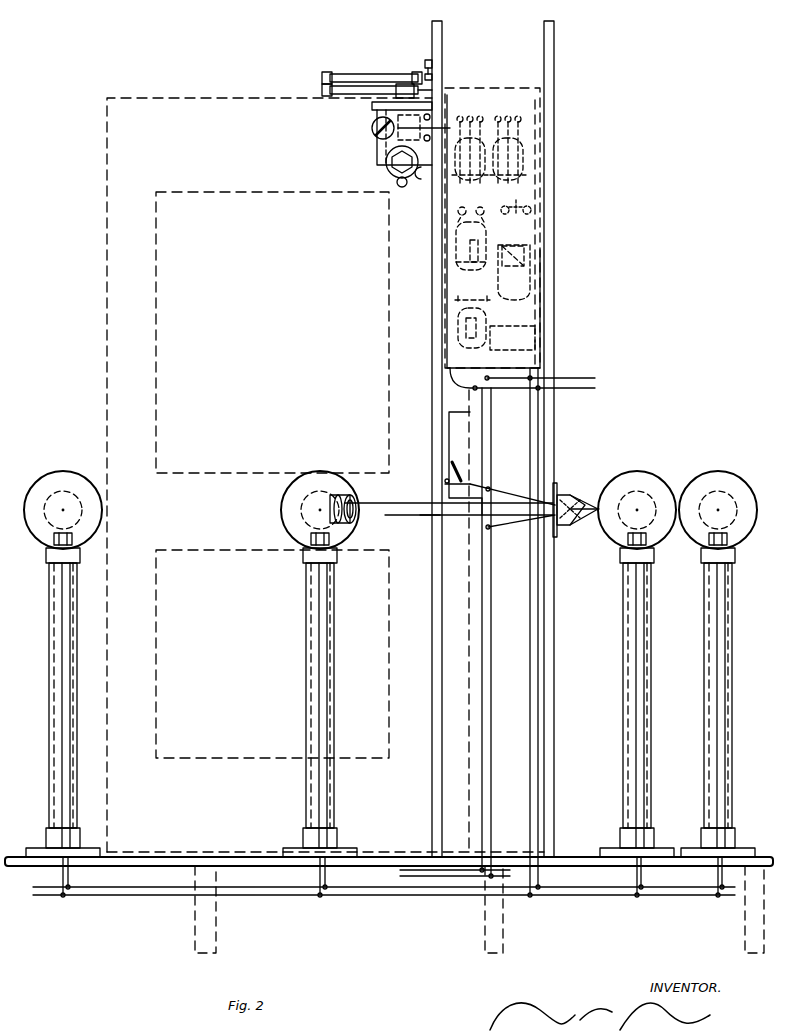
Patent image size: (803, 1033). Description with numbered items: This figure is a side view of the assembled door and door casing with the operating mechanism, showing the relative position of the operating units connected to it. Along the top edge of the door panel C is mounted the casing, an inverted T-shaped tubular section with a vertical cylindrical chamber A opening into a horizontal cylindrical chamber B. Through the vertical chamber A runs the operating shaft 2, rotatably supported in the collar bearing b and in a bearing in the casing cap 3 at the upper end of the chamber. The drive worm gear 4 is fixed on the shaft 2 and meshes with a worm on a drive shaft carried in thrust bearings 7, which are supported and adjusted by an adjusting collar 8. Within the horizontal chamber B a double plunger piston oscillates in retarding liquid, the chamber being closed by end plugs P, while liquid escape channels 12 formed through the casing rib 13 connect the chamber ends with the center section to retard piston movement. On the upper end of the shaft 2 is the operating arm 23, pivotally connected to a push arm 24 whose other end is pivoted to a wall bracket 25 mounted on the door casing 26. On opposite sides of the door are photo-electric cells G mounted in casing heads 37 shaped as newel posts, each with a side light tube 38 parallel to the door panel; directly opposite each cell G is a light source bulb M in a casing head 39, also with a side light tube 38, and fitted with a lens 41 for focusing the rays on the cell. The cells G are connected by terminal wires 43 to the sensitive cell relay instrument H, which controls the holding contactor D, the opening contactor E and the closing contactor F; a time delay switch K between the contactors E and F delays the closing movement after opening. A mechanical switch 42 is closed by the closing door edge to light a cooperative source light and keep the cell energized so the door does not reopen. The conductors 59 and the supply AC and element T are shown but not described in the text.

The operating shaft 2 is at (378, 117).
The casing cap 3 is at (376, 106).
The drive worm gear 4 is at (429, 127).
The bearings 7 is at (437, 108).
The adjusting collar 8 is at (380, 138).
The liquid escape channels 12 is at (392, 182).
The casing rib 13 is at (404, 186).
The operating arm 23 is at (348, 95).
The push arm 24 is at (358, 74).
The wall bracket 25 is at (425, 64).
The door casing 26 is at (442, 40).
The casing head 37 is at (100, 522).
The side light tube 38 is at (353, 522).
The casing head 39 is at (300, 520).
The lens 41 is at (352, 494).
The mechanical switch 42 is at (455, 452).
The terminal wires 43 is at (70, 602).
The conductor 59 is at (485, 626).
The door panel C is at (205, 98).
The photo-electric cell G is at (82, 505).
The light source bulb M is at (305, 503).
The timer T is at (372, 127).
The vertical cylindrical chamber A is at (384, 157).
The horizontal cylindrical chamber B is at (388, 172).
The end plugs P is at (390, 165).
The collar bearing b is at (385, 147).
The holding contactor D is at (471, 238).
The opening contactor E is at (470, 150).
The closing contactor F is at (508, 150).
The sensitive cell relay instrument H is at (514, 272).
The time delay switch K is at (520, 203).
The A.C. supply AC is at (536, 379).